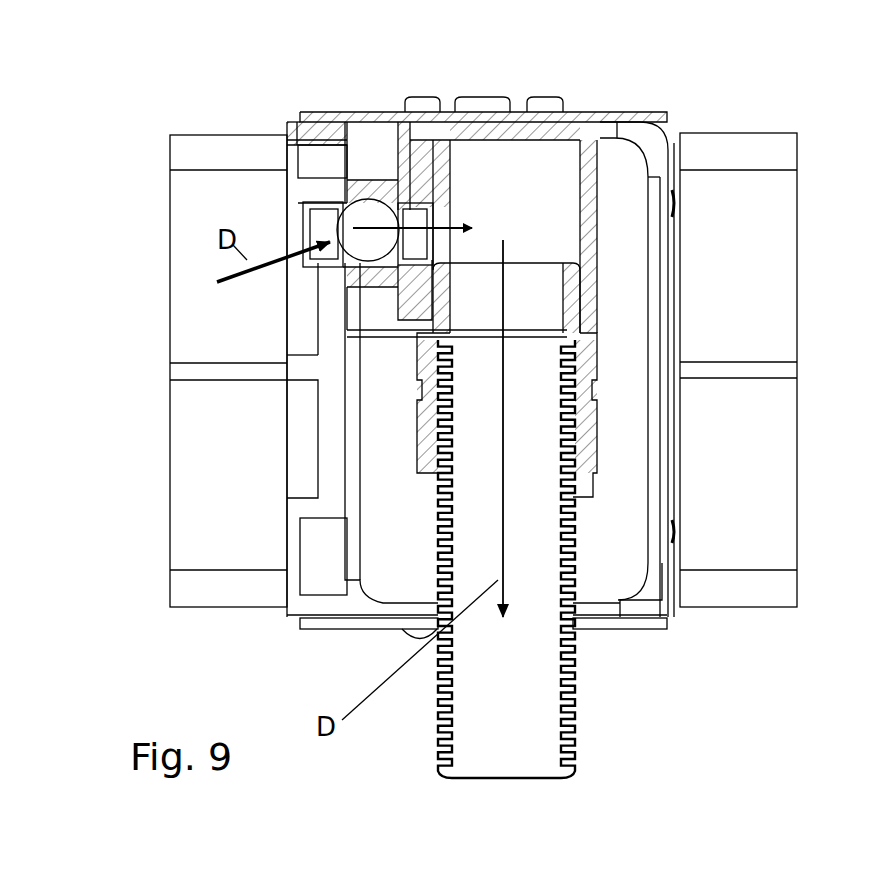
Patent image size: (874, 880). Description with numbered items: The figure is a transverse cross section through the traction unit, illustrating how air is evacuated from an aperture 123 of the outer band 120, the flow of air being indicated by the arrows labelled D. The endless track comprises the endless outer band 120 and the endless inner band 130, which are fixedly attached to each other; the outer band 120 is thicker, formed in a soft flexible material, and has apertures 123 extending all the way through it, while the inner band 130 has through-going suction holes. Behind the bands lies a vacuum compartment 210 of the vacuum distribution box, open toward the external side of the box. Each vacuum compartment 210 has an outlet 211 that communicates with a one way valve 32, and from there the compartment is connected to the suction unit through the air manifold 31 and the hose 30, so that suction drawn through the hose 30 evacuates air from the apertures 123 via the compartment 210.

The hose 30 is at (577, 687).
The air manifold 31 is at (548, 225).
The one way valve 32 is at (377, 193).
The outer band 120 is at (203, 152).
The aperture 123 is at (183, 325).
The inner band 130 is at (287, 207).
The vacuum compartment 210 is at (377, 357).
The outlet 211 is at (305, 248).